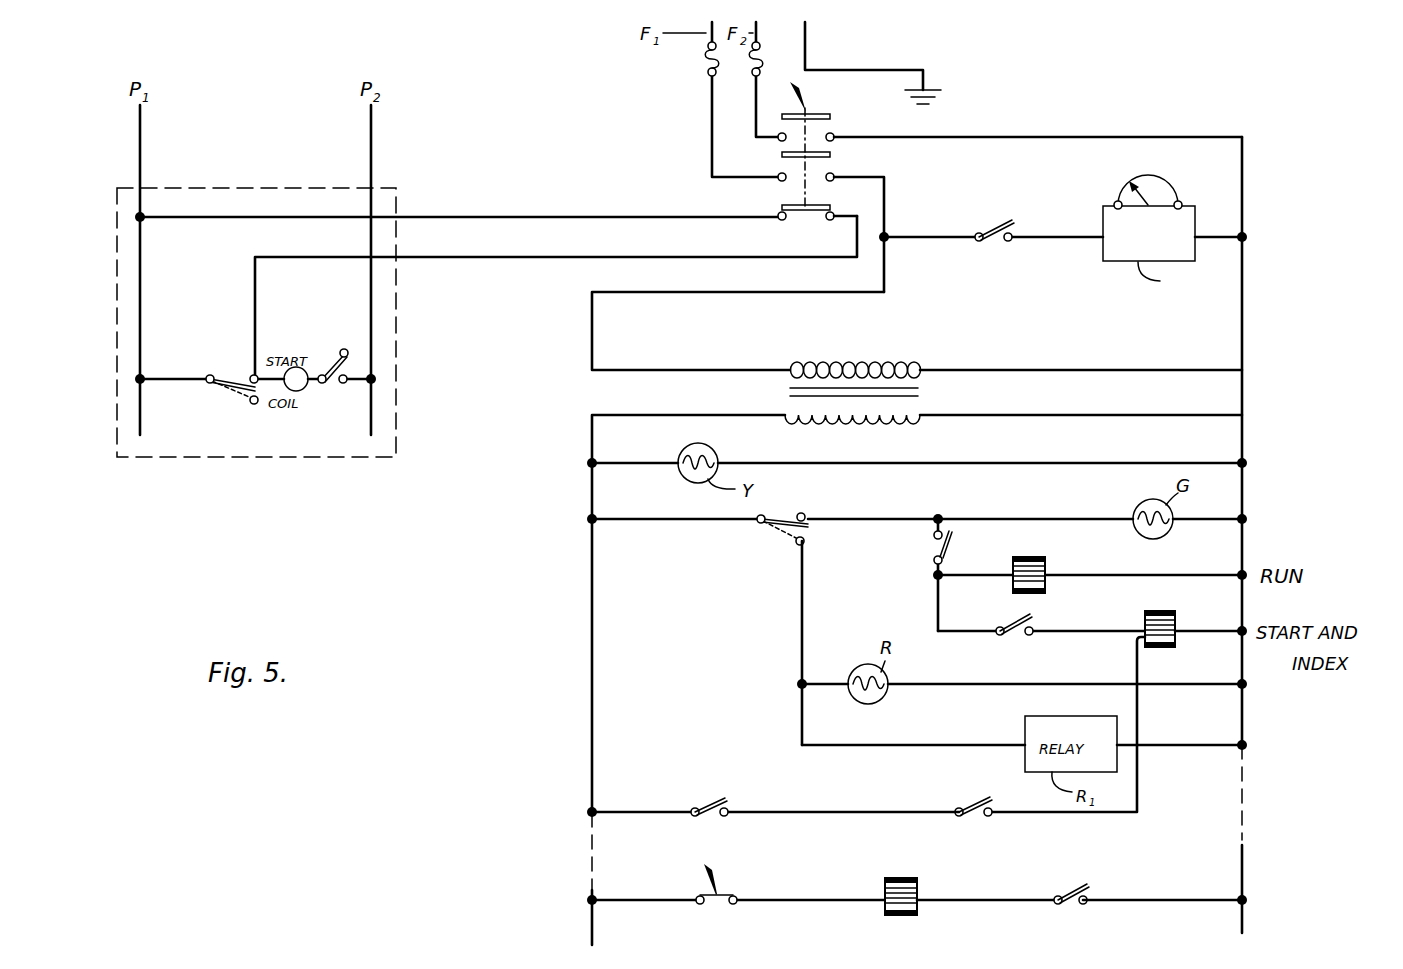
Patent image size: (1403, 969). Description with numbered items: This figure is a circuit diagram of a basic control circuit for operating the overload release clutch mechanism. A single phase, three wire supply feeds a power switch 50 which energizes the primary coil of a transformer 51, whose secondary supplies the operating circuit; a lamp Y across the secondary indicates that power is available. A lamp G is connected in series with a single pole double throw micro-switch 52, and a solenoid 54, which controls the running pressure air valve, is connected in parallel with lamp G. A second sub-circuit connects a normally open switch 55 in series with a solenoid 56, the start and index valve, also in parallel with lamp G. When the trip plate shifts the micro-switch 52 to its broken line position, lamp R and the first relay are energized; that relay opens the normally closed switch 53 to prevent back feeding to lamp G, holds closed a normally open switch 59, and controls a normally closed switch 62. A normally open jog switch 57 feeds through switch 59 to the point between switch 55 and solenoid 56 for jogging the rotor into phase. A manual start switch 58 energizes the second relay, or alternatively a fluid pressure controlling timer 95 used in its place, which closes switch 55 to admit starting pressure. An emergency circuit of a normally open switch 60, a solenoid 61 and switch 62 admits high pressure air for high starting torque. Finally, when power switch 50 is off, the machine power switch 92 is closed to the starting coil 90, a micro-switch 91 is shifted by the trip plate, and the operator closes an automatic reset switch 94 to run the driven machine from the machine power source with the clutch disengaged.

The power switch 50 is at (851, 129).
The transformer 51 is at (885, 325).
The micro-switch 52 is at (768, 529).
The switch 53 is at (946, 542).
The solenoid 54 is at (1046, 568).
The switch 55 is at (1018, 619).
The solenoid 56 is at (1172, 616).
The jog switch 57 is at (716, 798).
The manual start switch 58 is at (998, 220).
The switch 59 is at (968, 799).
The switch 60 is at (718, 906).
The solenoid 61 is at (916, 879).
The switch 62 is at (1081, 886).
The starting coil 90 is at (306, 370).
The micro-switch 91 is at (217, 372).
The machine power switch 92 is at (784, 222).
The switch 94 is at (338, 389).
The timer 95 is at (1176, 193).